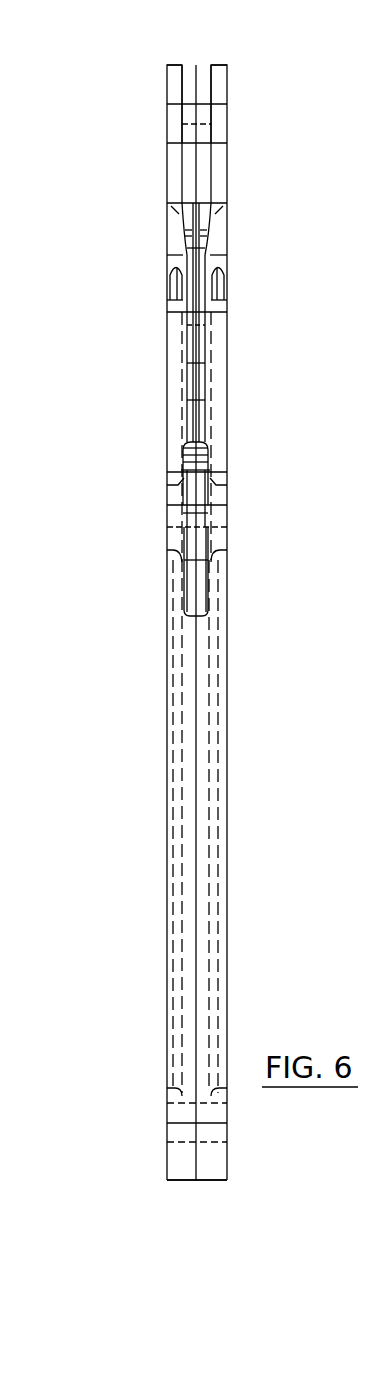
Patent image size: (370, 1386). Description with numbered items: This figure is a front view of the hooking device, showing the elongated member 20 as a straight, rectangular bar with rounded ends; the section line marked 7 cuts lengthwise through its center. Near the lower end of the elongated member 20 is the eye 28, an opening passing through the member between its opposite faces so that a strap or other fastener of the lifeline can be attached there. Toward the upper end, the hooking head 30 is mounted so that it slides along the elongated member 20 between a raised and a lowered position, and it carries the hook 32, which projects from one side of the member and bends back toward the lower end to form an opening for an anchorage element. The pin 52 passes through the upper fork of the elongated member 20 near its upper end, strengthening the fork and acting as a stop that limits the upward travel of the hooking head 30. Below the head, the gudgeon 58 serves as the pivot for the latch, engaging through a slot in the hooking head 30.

The section line 7- 7 is at (145, 632).
The elongated member 20 is at (128, 758).
The eye 28 is at (172, 1132).
The hooking head 30 is at (140, 232).
The hook 32 is at (369, 222).
The pin 52 is at (192, 124).
The gudgeon 58 is at (187, 499).